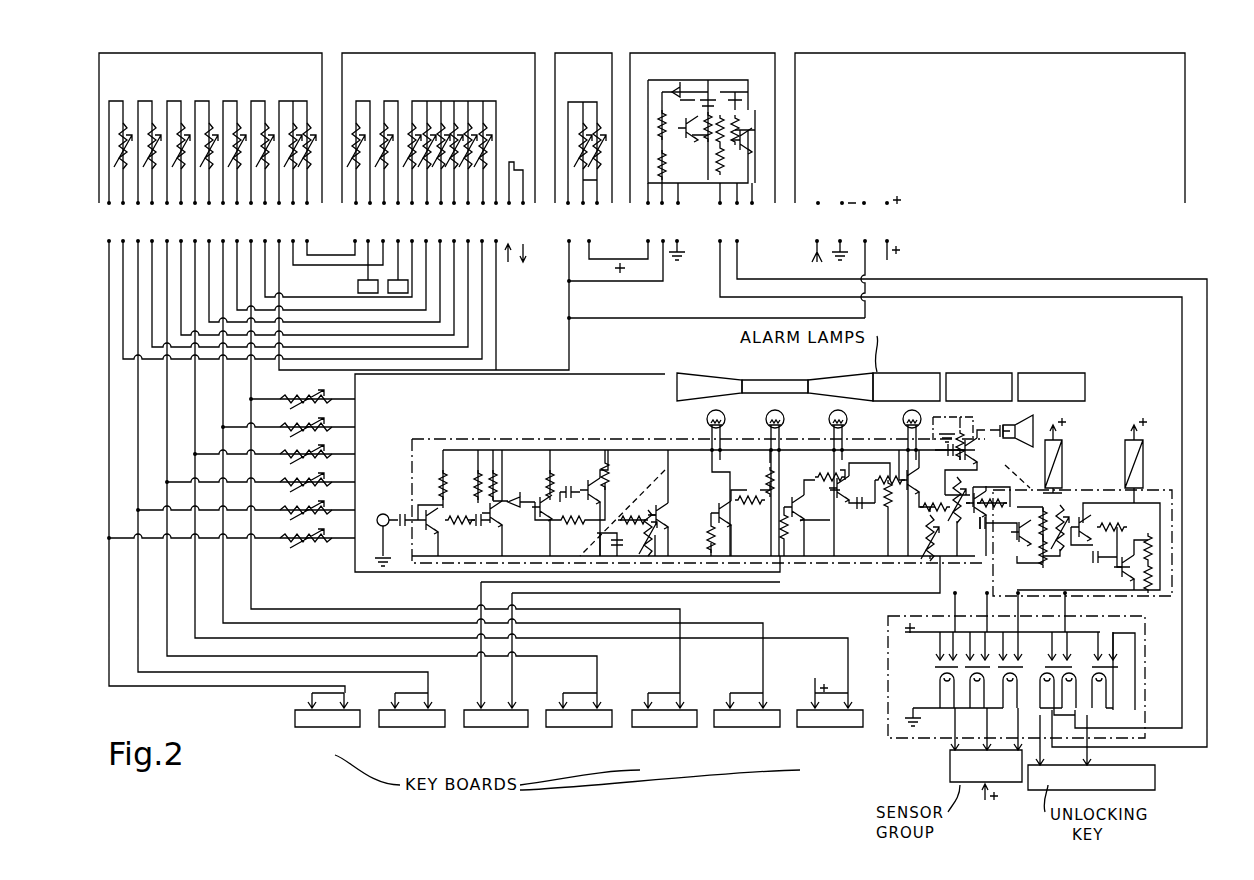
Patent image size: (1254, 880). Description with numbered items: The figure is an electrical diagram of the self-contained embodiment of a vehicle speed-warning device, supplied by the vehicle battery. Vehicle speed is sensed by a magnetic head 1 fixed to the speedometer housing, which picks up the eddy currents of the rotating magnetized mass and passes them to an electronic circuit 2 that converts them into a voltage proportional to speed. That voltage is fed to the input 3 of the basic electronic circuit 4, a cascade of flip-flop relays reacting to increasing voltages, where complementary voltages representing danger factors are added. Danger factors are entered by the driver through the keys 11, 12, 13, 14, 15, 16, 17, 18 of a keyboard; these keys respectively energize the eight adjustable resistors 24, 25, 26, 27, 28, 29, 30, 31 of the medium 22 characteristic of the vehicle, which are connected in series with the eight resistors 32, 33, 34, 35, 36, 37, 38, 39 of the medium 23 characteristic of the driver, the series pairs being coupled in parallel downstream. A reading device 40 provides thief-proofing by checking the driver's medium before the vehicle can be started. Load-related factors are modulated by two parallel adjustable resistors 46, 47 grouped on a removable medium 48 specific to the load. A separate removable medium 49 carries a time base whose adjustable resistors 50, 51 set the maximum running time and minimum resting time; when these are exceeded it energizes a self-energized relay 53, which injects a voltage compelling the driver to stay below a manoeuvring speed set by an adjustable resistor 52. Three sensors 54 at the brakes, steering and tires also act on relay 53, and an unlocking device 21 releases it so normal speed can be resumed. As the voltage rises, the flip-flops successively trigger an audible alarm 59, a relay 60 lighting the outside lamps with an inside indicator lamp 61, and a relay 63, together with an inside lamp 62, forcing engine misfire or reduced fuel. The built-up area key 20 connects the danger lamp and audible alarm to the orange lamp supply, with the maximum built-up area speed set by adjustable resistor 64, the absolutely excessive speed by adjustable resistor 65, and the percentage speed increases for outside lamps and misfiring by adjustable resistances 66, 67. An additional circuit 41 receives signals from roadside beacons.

The magnetic head 1 is at (384, 514).
The electronic circuit 2 is at (746, 477).
The input 3 is at (610, 545).
The basic electronic circuit 4 is at (1104, 507).
The key 11 is at (830, 722).
The key 12 is at (747, 722).
The key 13 is at (665, 722).
The key 14 is at (580, 722).
The key 15 is at (408, 287).
The key 16 is at (332, 722).
The key 17 is at (358, 287).
The key 18 is at (412, 722).
The built-up area key 20 is at (496, 722).
The unlocking device 21 is at (1155, 780).
The medium characteristic of the vehicle 22 is at (204, 146).
The medium characteristic of the driver 23 is at (448, 146).
The adjustable resistor 24 is at (268, 158).
The adjustable resistor 25 is at (240, 125).
The adjustable resistor 26 is at (212, 160).
The adjustable resistor 27 is at (186, 125).
The adjustable resistor 28 is at (298, 125).
The adjustable resistor 29 is at (124, 140).
The adjustable resistor 30 is at (310, 120).
The adjustable resistor 31 is at (156, 160).
The resistor 32 is at (414, 130).
The resistor 33 is at (444, 165).
The resistor 34 is at (430, 130).
The resistor 35 is at (456, 165).
The resistor 36 is at (386, 160).
The resistor 37 is at (485, 150).
The resistor 38 is at (350, 130).
The resistor 39 is at (470, 130).
The reading device 40 is at (518, 205).
The additional circuit 41 is at (980, 108).
The adjustable resistor 46 is at (580, 170).
The adjustable resistor 47 is at (598, 170).
The medium specific to the load 48 is at (591, 146).
The time base medium 49 is at (702, 146).
The adjustable resistor 50 is at (720, 140).
The adjustable resistor 51 is at (748, 160).
The adjustable resistor 52 is at (728, 495).
The relay 53 is at (1145, 683).
The sensors 54 is at (950, 765).
The audible alarm 59 is at (1030, 415).
The relay 60 is at (1062, 466).
The inside indicator lamp 61 is at (980, 385).
The inside lamp 62 is at (1050, 385).
The relay 63 is at (1140, 462).
The adjustable resistor 64 is at (645, 528).
The adjustable resistor 65 is at (926, 536).
The adjustable resistance 66 is at (962, 505).
The adjustable resistance 67 is at (1063, 512).